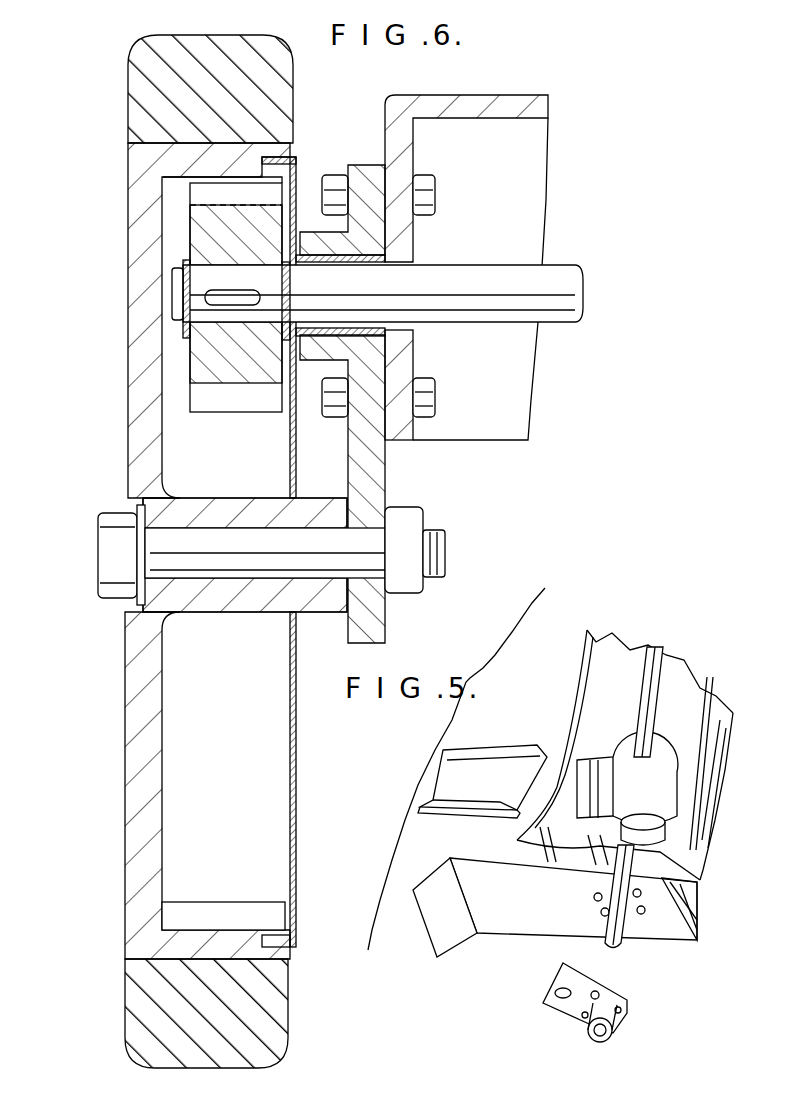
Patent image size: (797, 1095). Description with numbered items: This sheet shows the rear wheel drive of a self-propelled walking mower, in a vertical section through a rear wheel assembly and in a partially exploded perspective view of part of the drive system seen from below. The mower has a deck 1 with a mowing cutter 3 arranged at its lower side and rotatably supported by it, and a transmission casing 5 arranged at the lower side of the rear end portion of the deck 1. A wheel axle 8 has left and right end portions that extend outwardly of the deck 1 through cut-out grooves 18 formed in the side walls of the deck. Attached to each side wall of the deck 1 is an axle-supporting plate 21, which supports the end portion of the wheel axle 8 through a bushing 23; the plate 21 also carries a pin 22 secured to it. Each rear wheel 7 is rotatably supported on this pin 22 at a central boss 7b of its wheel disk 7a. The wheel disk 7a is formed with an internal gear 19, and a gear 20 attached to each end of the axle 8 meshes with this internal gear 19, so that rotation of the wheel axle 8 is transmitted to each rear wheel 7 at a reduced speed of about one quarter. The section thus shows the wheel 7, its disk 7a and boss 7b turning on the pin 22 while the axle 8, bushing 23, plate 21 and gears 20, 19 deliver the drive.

In FIG. 6, the deck 1 is at (536, 97).
In FIG. 5, the deck 1 is at (705, 813).
In FIG. 5, the mowing cutter 3 is at (495, 748).
In FIG. 5, the transmission casing 5 is at (660, 765).
In FIG. 6, the rear wheel 7 is at (258, 1026).
In FIG. 6, the wheel disk 7a is at (140, 818).
In FIG. 6, the central boss 7b is at (245, 512).
In FIG. 6, the wheel axle 8 is at (551, 280).
In FIG. 5, the wheel axle 8 is at (625, 920).
In FIG. 5, the cut-out groove 18 is at (650, 880).
In FIG. 6, the internal gear 19 is at (220, 915).
In FIG. 6, the gear 20 is at (222, 395).
In FIG. 6, the axle-supporting plate 21 is at (370, 470).
In FIG. 5, the axle-supporting plate 21 is at (563, 982).
In FIG. 6, the pin 22 is at (255, 557).
In FIG. 6, the bushing 23 is at (378, 256).